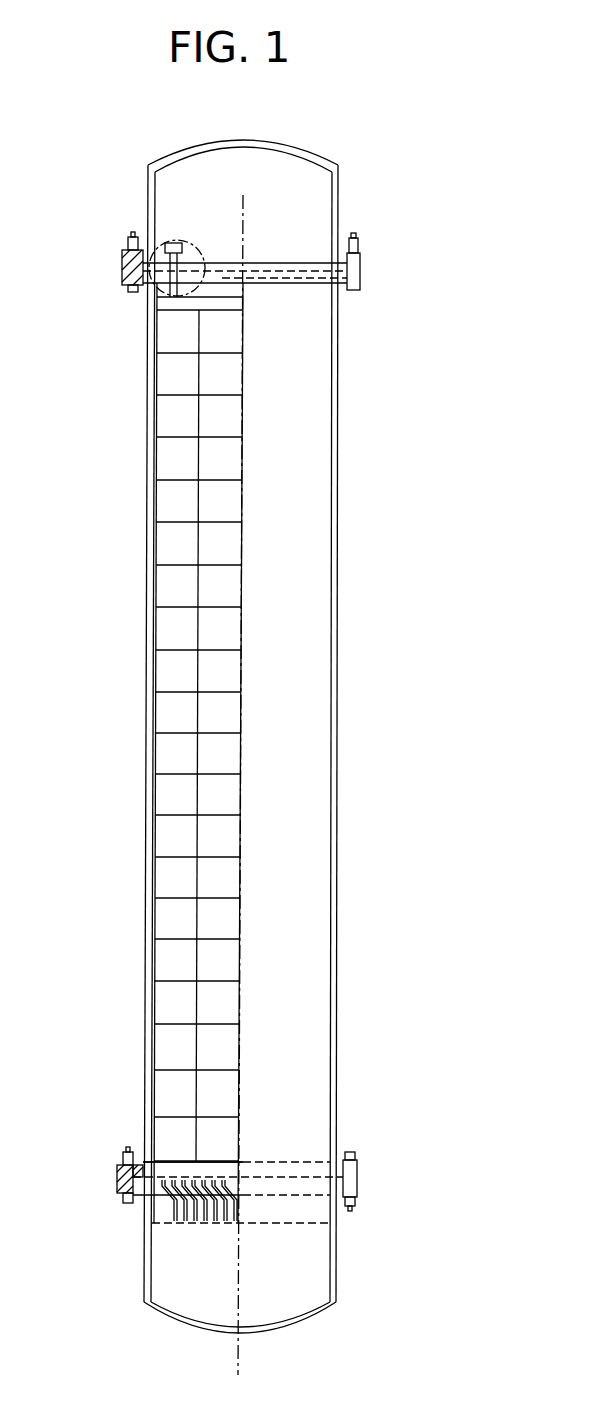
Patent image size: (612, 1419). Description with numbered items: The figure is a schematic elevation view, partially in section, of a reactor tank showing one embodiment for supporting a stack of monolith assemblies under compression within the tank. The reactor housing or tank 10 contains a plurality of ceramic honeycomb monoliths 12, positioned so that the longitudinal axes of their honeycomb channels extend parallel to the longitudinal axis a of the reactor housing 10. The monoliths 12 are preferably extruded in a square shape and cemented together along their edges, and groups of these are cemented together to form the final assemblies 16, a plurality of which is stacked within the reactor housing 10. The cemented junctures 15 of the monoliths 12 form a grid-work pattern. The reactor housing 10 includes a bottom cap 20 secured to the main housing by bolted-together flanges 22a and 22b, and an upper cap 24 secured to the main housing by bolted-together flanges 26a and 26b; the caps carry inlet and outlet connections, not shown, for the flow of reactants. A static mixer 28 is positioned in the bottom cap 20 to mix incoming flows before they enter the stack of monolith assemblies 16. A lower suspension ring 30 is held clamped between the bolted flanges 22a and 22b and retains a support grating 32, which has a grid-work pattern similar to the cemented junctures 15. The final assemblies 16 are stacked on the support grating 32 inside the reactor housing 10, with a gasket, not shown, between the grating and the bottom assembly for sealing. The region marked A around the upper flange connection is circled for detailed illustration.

The reactor housing 10 is at (339, 353).
The ceramic honeycomb monolith 12 is at (170, 328).
The cemented juncture 15 is at (197, 482).
The final assembly 16 is at (213, 418).
The bottom cap 20 is at (285, 1327).
The flange 22a is at (358, 1170).
The flange 22b is at (359, 1187).
The upper cap 24 is at (283, 141).
The flange 26a is at (367, 273).
The flange 26b is at (364, 254).
The static mixer 28 is at (213, 1221).
The lower suspension ring 30 is at (163, 1172).
The support grating 32 is at (213, 1160).
The detail region A is at (172, 242).
The longitudinal axis a is at (246, 233).